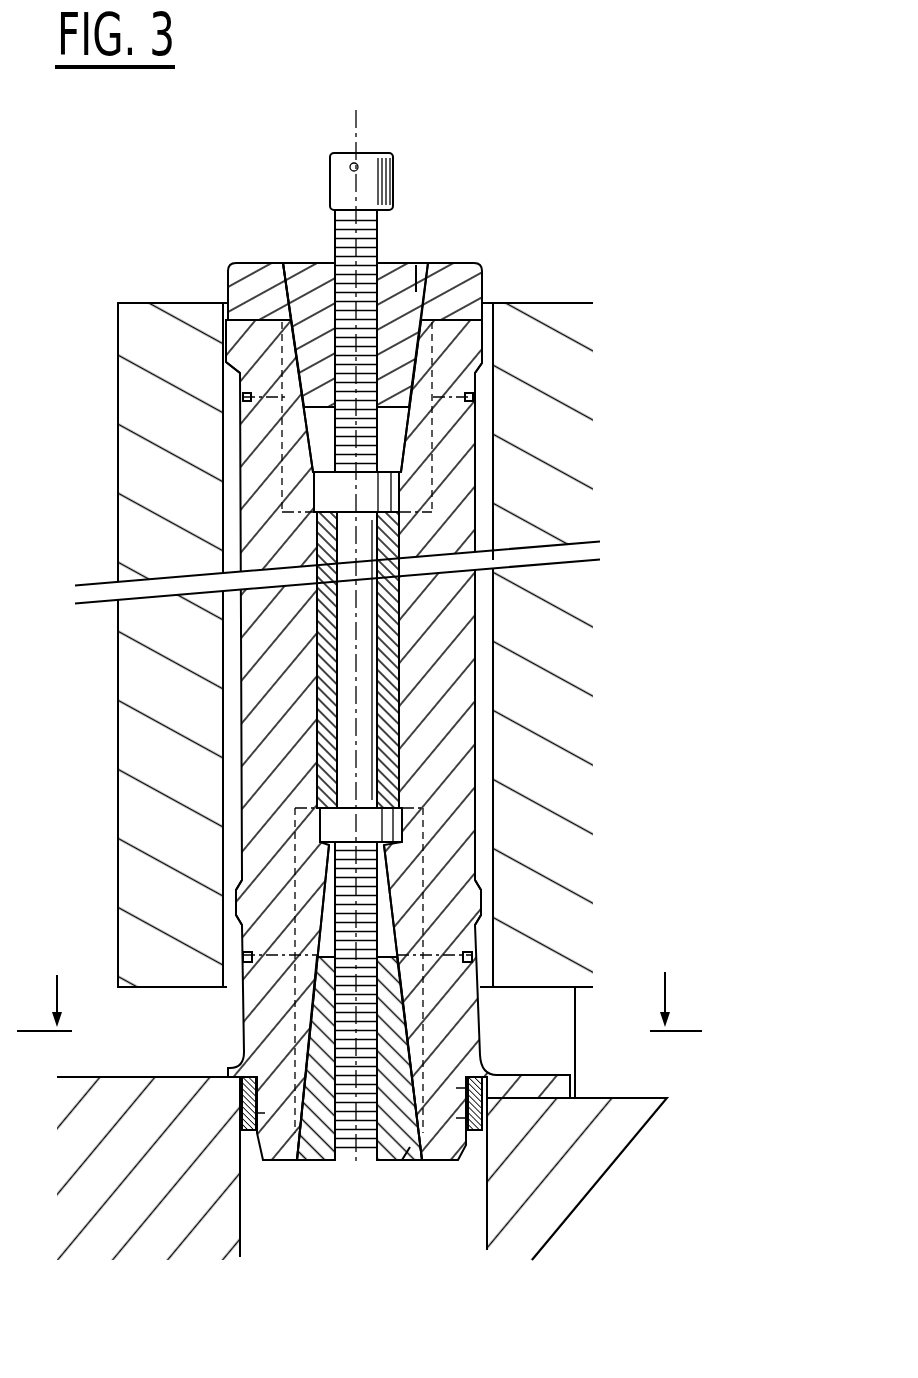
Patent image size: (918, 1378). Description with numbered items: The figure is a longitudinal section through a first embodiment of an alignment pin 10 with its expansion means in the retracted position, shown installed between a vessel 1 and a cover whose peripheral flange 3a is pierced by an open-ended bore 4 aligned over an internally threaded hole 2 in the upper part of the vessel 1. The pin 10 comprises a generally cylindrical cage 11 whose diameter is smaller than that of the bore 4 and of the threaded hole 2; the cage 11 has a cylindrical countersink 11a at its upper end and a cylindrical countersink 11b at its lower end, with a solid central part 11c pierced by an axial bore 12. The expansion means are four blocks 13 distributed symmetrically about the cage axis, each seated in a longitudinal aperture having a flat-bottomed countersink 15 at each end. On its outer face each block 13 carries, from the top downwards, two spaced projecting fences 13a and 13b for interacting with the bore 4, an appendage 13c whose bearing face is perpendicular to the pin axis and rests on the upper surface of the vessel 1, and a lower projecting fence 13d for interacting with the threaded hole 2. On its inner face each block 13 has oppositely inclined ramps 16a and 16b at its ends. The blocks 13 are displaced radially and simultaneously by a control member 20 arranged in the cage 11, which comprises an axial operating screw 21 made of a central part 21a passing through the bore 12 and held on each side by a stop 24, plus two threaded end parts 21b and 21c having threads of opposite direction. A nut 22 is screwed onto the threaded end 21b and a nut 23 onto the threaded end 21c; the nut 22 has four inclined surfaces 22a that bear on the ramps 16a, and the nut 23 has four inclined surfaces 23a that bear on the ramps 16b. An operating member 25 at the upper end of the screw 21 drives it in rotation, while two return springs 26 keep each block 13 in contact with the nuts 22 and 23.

The vessel 1 is at (152, 1148).
The internally threaded hole 2 is at (265, 1212).
The peripheral flange 3a is at (118, 700).
The open-ended bore 4 is at (233, 558).
The alignment pin 10 is at (405, 244).
The cage 11 is at (247, 277).
The cylindrical countersink 11a is at (468, 397).
The cylindrical countersink 11b is at (482, 930).
The solid central part 11c is at (385, 690).
The bore 12 is at (372, 618).
The block 13 is at (253, 748).
The projecting fence 13a is at (233, 348).
The projecting fence 13b is at (237, 898).
The appendage 13c is at (228, 1060).
The projecting fence 13d is at (237, 1147).
The countersink 15 is at (416, 297).
The ramp 16a is at (312, 452).
The ramp 16b is at (329, 868).
The control member 20 is at (395, 466).
The operating screw 21 is at (357, 695).
The central part 21a is at (370, 730).
The threaded end 21b is at (375, 227).
The threaded end 21c is at (327, 1163).
The nut 22 is at (307, 277).
The inclined surface 22a is at (262, 310).
The nut 23 is at (373, 1163).
The inclined surface 23a is at (242, 1085).
The stop 24 is at (400, 495).
The operating member 25 is at (367, 165).
The return spring 26 is at (243, 398).